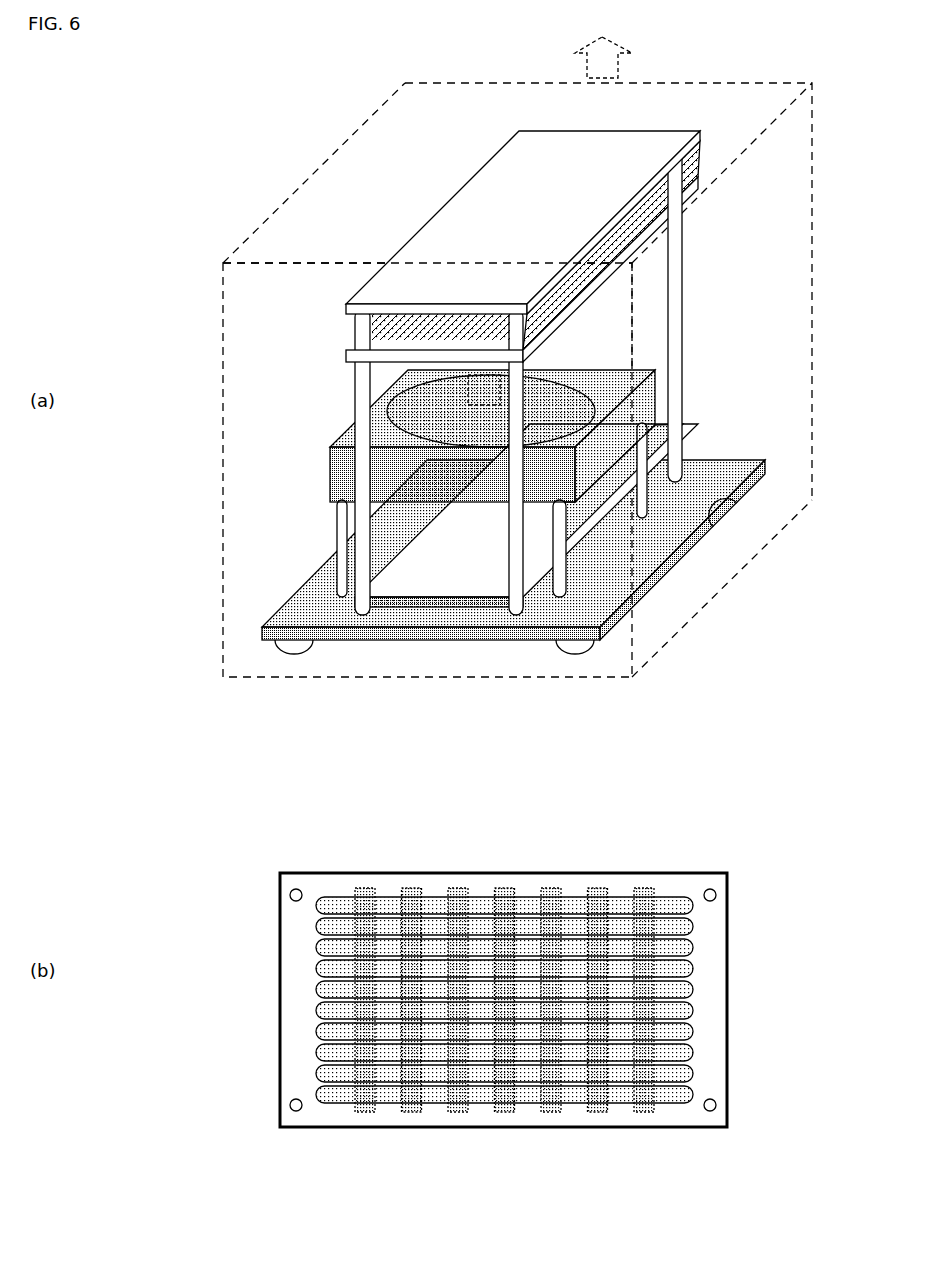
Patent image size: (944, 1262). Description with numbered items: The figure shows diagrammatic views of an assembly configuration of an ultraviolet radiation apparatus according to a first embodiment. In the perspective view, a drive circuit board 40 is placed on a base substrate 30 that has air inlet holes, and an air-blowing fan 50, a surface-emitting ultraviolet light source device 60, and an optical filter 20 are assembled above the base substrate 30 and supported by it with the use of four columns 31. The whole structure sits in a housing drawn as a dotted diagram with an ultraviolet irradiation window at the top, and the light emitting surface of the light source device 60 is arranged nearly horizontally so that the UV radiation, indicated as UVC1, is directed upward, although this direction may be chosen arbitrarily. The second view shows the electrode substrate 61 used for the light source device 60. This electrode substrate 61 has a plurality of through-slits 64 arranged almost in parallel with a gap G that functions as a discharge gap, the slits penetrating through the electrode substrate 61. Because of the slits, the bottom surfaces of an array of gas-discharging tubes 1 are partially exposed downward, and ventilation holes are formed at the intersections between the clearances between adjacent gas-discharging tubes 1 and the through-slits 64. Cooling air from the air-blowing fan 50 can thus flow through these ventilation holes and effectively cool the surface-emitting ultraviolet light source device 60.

The optical filter 20 is at (350, 295).
The surface-emitting ultraviolet light source device 60 is at (347, 350).
The air-blowing fan 50 is at (347, 433).
The column 31 is at (688, 275).
The drive circuit board 40 is at (583, 537).
The base substrate 30 is at (506, 615).
The through-slit 64 is at (413, 892).
The gas-discharging tube 1 is at (480, 900).
The electrode substrate 61 is at (730, 878).
The gap G is at (497, 1108).
The ultraviolet light UVC1 is at (603, 45).